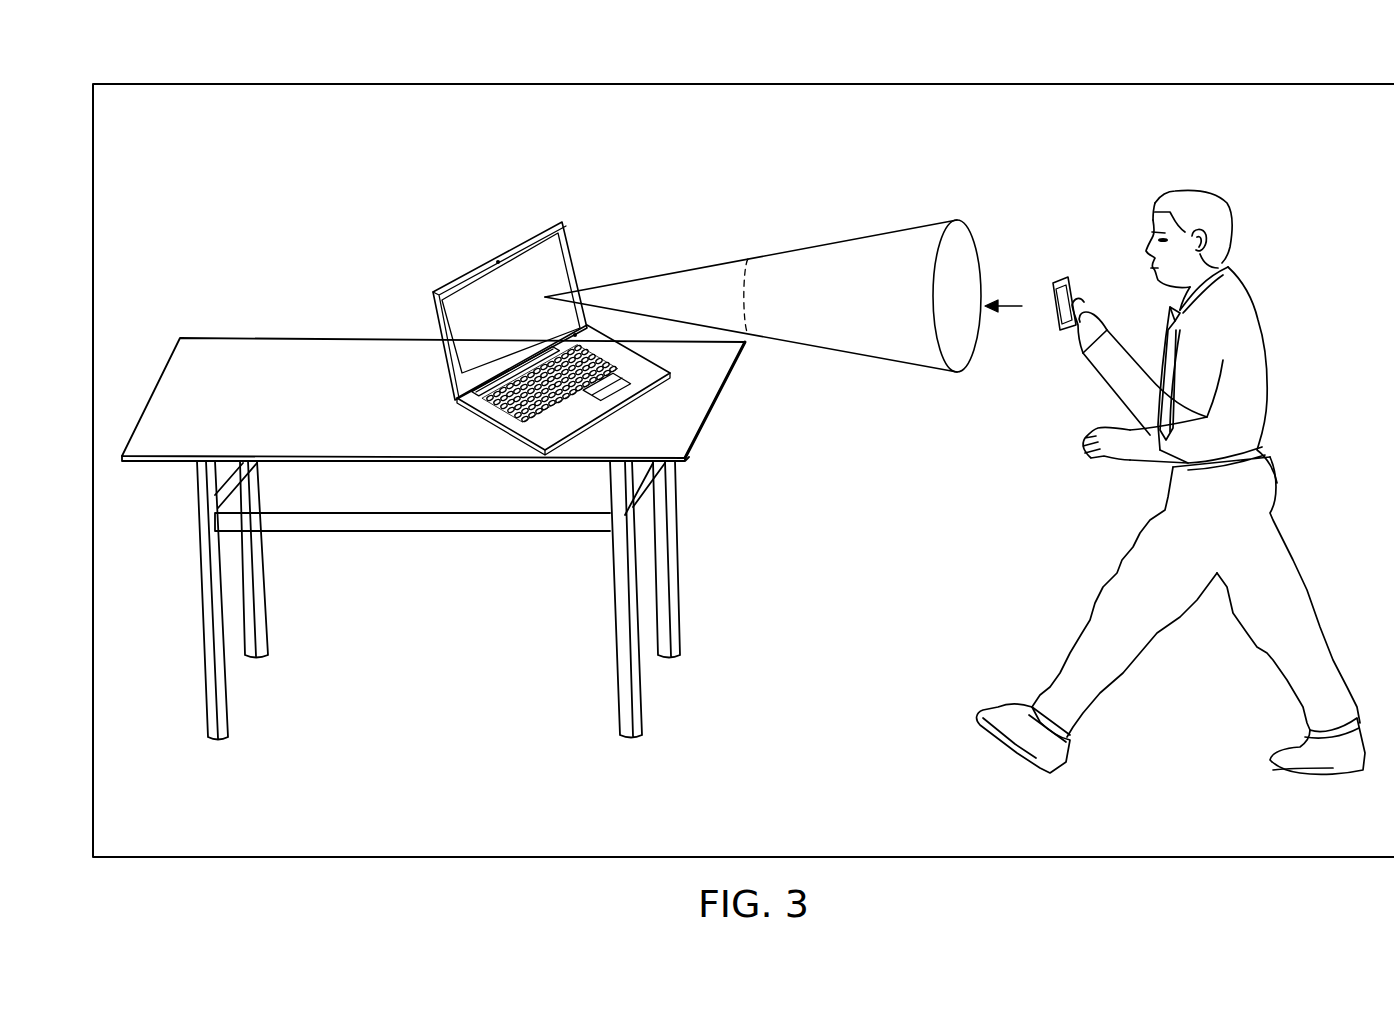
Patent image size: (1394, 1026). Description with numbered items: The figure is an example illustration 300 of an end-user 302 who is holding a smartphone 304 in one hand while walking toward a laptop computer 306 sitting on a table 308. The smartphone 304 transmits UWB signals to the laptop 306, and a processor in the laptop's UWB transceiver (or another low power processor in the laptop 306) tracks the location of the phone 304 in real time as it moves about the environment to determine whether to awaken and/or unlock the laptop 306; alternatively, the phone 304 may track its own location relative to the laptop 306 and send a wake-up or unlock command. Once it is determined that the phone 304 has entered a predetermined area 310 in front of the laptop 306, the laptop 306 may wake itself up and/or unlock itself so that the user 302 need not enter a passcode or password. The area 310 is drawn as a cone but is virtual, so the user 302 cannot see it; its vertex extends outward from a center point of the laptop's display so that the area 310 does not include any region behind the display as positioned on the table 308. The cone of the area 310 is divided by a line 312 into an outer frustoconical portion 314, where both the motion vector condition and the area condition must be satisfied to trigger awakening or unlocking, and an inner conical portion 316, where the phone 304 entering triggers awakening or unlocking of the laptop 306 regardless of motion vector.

The example illustration 300 is at (118, 56).
The end-user 302 is at (1235, 220).
The smartphone 304 is at (1062, 275).
The laptop computer 306 is at (496, 262).
The table 308 is at (232, 338).
The predetermined area 310 is at (763, 299).
The line 312 is at (746, 259).
The outer frustoconical portion 314 is at (863, 336).
The inner conical portion 316 is at (627, 300).